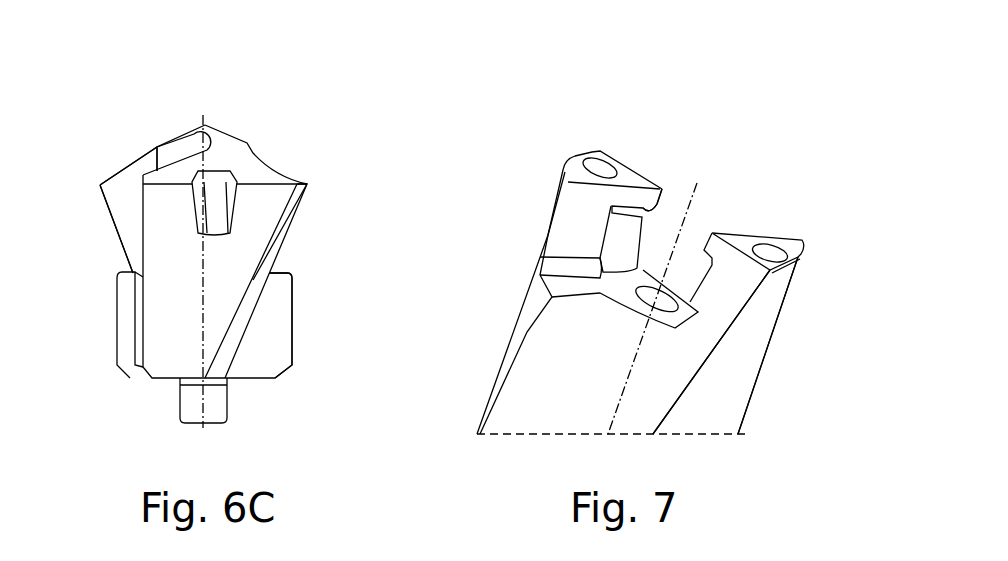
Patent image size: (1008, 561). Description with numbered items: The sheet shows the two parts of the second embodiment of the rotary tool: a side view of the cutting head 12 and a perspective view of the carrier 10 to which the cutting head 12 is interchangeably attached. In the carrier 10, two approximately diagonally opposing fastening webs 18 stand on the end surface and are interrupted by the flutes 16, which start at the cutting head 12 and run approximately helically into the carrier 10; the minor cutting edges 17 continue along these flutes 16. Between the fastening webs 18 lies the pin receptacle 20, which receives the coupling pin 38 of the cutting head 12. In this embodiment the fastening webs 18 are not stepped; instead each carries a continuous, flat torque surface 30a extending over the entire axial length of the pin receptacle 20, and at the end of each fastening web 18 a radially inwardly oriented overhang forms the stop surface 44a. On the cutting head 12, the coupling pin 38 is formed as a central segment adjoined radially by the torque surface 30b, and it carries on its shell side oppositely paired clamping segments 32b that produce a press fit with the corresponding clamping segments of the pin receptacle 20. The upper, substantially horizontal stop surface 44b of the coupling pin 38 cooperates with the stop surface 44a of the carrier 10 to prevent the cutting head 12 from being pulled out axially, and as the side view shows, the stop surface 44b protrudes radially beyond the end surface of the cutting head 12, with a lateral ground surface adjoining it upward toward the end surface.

In FIG. 7, the carrier 10 is at (787, 166).
In FIG. 6C, the cutting head 12 is at (242, 124).
In FIG. 6C, the flutes 16 is at (245, 358).
In FIG. 7, the flutes 16 is at (537, 400).
In FIG. 6C, the minor cutting edges 17 is at (298, 215).
In FIG. 7, the fastening webs 18 is at (750, 275).
In FIG. 7, the pin receptacle 20 is at (677, 263).
In FIG. 7, the torque surface 30a is at (590, 223).
In FIG. 6C, the torque surface 30b is at (142, 232).
In FIG. 6C, the clamping segments 32b is at (123, 317).
In FIG. 6C, the coupling pin 38 is at (273, 335).
In FIG. 7, the stop surface 44a is at (650, 213).
In FIG. 6C, the stop surface 44b is at (288, 277).